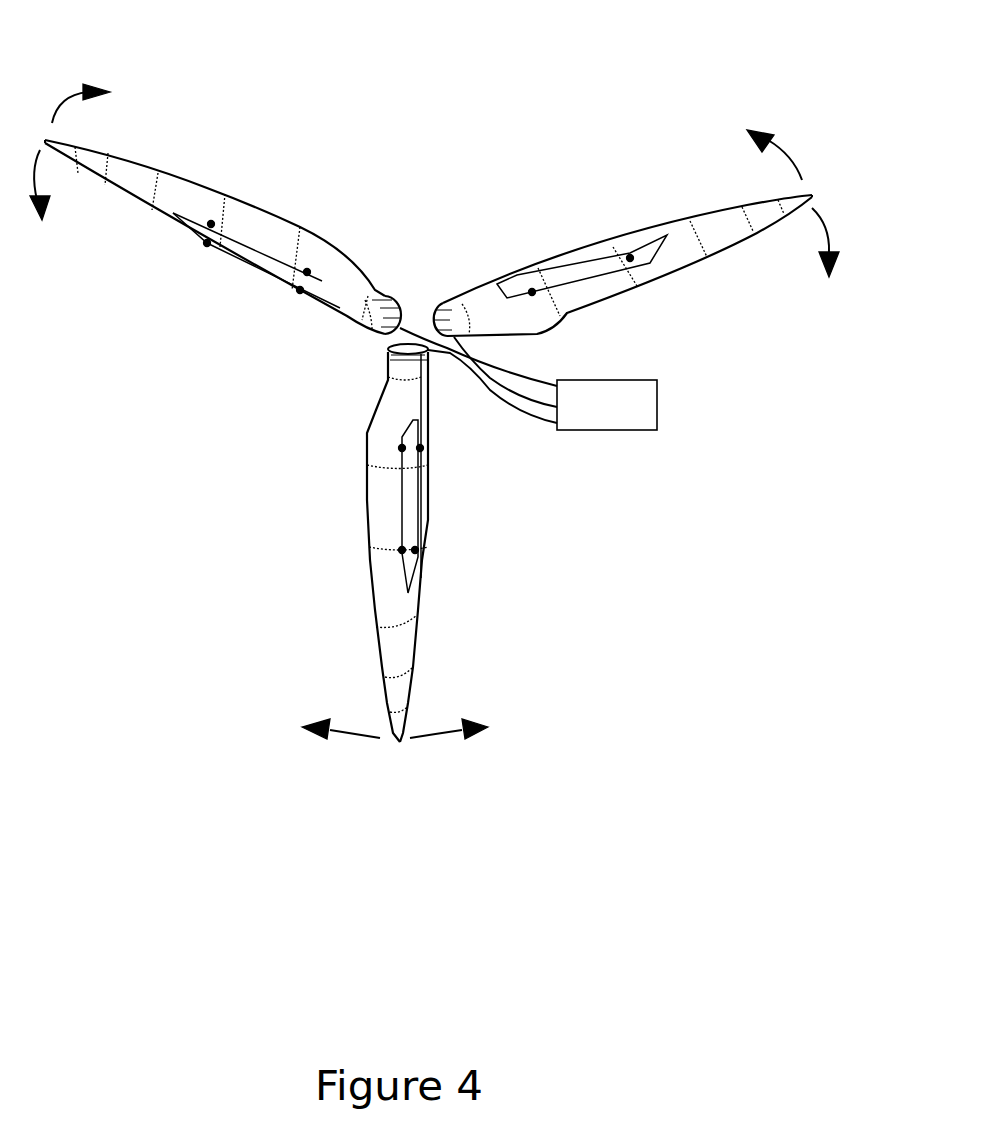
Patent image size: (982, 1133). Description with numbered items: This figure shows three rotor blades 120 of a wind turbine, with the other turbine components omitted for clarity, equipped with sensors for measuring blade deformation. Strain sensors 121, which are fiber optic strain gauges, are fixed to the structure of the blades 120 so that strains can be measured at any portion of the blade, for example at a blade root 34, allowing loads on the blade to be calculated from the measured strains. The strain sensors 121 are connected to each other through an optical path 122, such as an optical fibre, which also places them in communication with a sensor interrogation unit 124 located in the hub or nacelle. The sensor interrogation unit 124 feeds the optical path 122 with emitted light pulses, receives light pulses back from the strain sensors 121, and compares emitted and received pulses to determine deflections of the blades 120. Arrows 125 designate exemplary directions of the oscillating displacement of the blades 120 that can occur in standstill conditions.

The rotor blade 120 is at (122, 180).
The strain sensor 121 is at (218, 233).
The optical path 122 is at (278, 253).
The blade root 34 is at (383, 290).
The sensor interrogation unit 124 is at (625, 412).
The arrows 125 is at (53, 97).